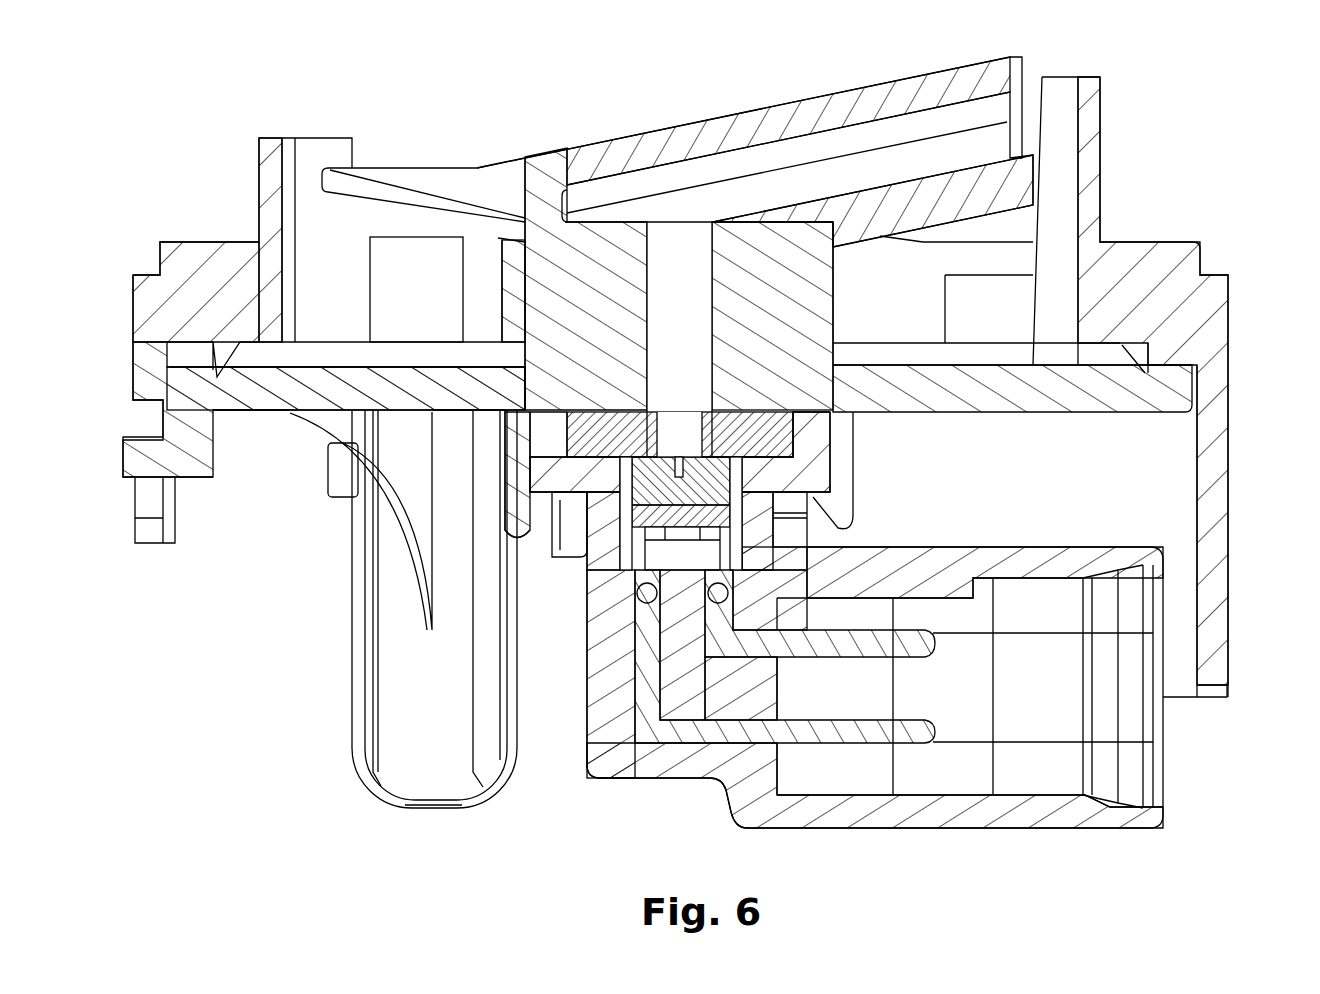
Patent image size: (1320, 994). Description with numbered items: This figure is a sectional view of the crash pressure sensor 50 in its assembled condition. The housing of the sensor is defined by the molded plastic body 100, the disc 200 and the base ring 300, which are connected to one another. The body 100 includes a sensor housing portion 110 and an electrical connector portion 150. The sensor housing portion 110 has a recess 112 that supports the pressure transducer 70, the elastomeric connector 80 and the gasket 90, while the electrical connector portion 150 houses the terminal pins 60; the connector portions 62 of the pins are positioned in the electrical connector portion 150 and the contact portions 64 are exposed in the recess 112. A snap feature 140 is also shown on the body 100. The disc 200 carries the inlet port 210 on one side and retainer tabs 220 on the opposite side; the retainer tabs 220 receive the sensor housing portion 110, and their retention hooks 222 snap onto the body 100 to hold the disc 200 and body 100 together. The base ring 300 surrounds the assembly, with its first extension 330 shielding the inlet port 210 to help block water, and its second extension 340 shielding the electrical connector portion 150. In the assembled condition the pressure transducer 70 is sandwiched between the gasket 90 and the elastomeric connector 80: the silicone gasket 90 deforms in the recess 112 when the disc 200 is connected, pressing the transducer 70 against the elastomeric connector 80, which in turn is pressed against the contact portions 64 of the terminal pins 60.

The pressure sensor 50 is at (390, 138).
The terminal pins 60 is at (655, 685).
The connector portions 62 is at (817, 728).
The contact portions 64 is at (650, 530).
The pressure transducer 70 is at (707, 487).
The elastomeric connector 80 is at (722, 518).
The gasket 90 is at (770, 430).
The body 100 is at (610, 630).
The sensor housing portion 110 is at (558, 473).
The recess 112 is at (614, 388).
The snap hook 140 is at (575, 482).
The electrical connector portion 150 is at (890, 808).
The disc 200 is at (787, 280).
The inlet port 210 is at (737, 130).
The retainer tabs 220 is at (840, 452).
The retention hooks 222 is at (830, 508).
The base ring 300 is at (1135, 303).
The first extension 330 is at (1086, 98).
The second extension 340 is at (1204, 463).